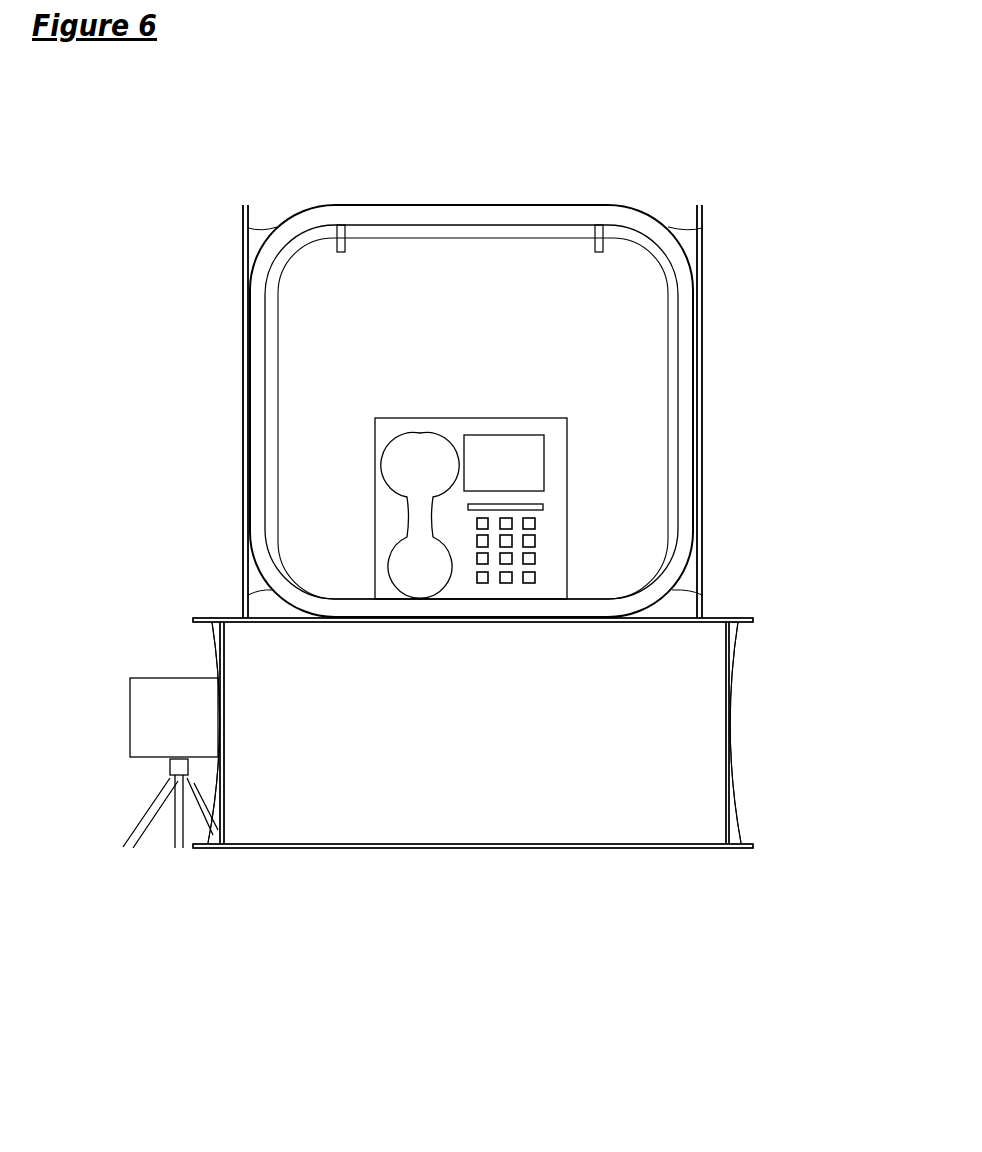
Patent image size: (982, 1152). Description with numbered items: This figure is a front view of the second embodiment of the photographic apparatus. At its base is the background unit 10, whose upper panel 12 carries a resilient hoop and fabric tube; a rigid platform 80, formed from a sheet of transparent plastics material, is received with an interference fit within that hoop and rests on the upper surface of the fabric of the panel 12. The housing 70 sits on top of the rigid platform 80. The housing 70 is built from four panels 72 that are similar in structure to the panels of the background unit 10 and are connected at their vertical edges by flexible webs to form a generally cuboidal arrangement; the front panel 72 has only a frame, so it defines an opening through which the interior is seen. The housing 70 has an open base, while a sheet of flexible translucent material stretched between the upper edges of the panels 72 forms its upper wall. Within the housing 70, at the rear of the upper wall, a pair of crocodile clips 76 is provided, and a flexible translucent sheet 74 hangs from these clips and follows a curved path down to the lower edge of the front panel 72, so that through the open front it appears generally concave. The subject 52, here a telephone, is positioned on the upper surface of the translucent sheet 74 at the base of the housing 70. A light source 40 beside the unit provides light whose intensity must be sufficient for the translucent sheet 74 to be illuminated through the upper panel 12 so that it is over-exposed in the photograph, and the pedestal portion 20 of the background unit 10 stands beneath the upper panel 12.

The background unit 10 is at (556, 880).
The upper panel 12 is at (753, 622).
The pedestal 20 is at (710, 742).
The light source 40 is at (143, 710).
The subject 52 is at (558, 543).
The housing 70 is at (748, 306).
The panels 72 is at (245, 258).
The translucent sheet 74 is at (302, 422).
The crocodile clips 76 is at (345, 225).
The rigid platform 80 is at (215, 613).